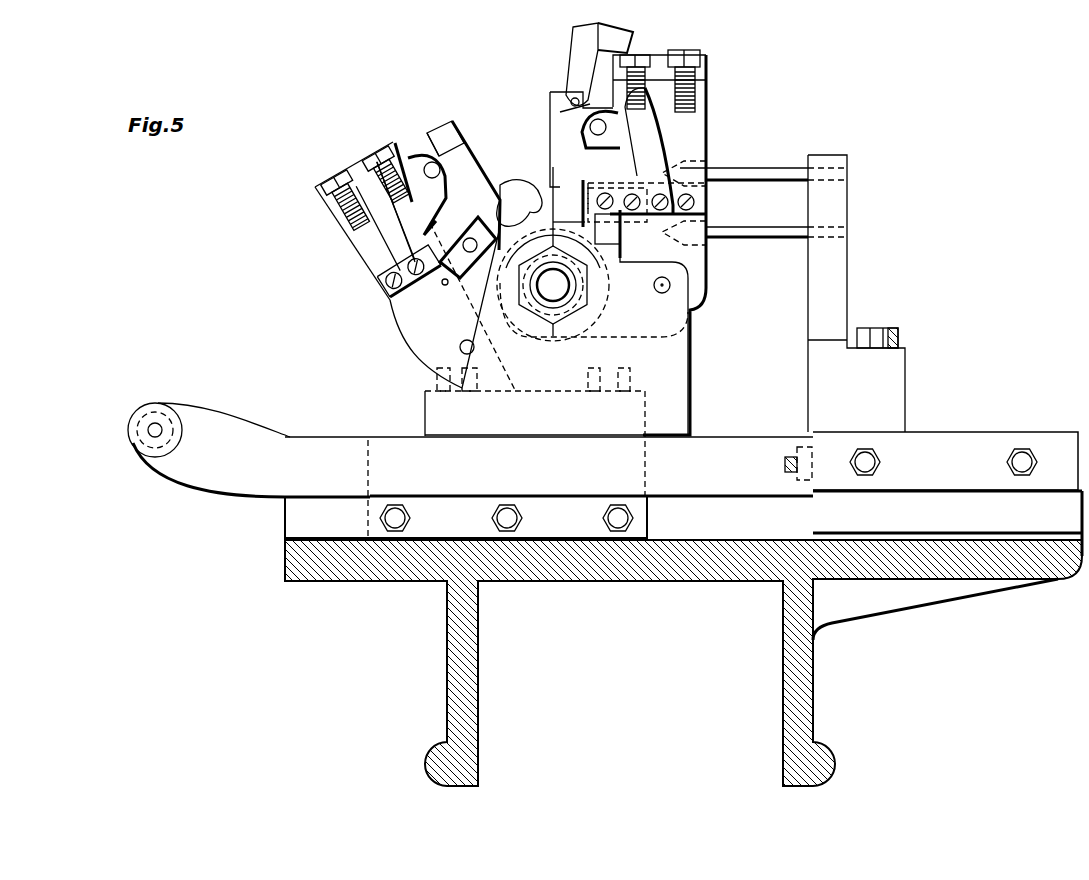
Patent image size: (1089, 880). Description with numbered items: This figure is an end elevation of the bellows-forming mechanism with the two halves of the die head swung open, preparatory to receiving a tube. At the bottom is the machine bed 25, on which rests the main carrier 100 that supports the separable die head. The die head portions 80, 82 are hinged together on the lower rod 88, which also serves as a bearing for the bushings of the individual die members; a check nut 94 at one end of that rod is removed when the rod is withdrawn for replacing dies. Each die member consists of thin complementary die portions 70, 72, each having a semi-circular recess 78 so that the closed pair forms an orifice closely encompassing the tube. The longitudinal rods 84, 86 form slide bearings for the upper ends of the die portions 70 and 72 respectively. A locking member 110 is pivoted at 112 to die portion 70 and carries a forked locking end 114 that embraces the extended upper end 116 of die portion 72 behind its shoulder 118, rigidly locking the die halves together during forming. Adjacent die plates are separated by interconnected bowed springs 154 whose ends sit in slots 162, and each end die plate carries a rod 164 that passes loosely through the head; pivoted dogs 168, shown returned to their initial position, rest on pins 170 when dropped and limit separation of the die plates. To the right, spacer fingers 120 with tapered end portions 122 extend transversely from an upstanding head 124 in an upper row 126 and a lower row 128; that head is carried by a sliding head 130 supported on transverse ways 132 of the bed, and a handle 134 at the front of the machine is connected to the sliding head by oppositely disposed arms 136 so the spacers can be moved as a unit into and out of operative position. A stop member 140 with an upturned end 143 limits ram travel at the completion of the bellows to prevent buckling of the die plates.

The bed 25 is at (357, 582).
The die portion 70 is at (558, 116).
The die portion 72 is at (450, 128).
The semi-circular recess 78 is at (532, 198).
The die head portion 80 is at (699, 70).
The die head portion 82 is at (358, 168).
The longitudinal rod 84 is at (590, 128).
The longitudinal rod 86 is at (437, 171).
The hinge rod 88 is at (557, 290).
The check nut 94 is at (554, 323).
The main carrier 100 is at (433, 410).
The locking member 110 is at (580, 60).
The pivot 112 is at (571, 101).
The forked locking end 114 is at (620, 40).
The extended upper end 116 is at (452, 128).
The shoulder 118 is at (421, 147).
The spacer finger 120 is at (769, 170).
The tapered end portion 122 is at (692, 169).
The upstanding head 124 is at (836, 283).
The upper row 126 is at (848, 169).
The lower row 128 is at (848, 230).
The sliding head 130 is at (1003, 415).
The transverse ways 132 is at (755, 523).
The handle 134 is at (132, 441).
The arm 136 is at (720, 450).
The stop member 140 is at (606, 258).
The upturned end 143 is at (515, 226).
The spring 154 is at (400, 250).
The slot 162 is at (482, 198).
The rod 164 is at (580, 192).
The pivoted dog 168 is at (652, 142).
The pin 170 is at (450, 279).